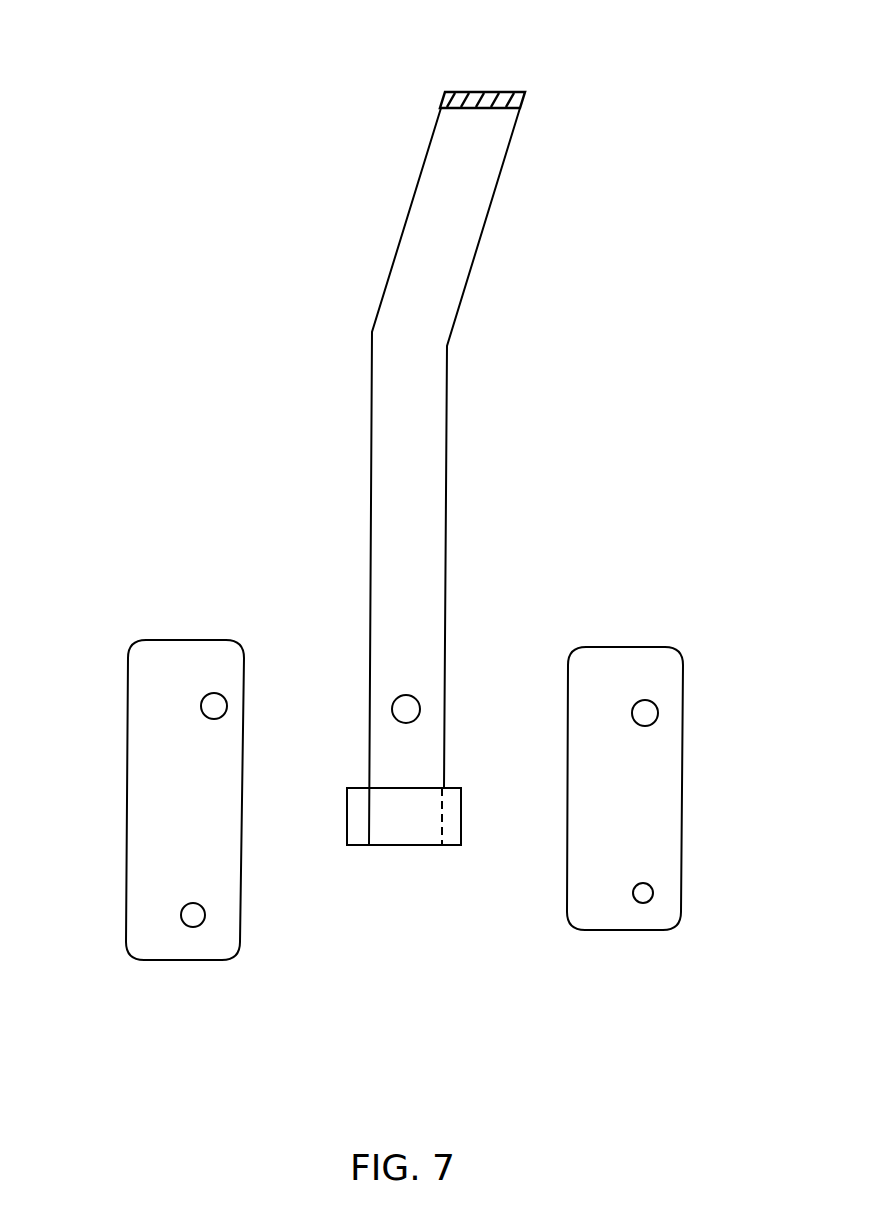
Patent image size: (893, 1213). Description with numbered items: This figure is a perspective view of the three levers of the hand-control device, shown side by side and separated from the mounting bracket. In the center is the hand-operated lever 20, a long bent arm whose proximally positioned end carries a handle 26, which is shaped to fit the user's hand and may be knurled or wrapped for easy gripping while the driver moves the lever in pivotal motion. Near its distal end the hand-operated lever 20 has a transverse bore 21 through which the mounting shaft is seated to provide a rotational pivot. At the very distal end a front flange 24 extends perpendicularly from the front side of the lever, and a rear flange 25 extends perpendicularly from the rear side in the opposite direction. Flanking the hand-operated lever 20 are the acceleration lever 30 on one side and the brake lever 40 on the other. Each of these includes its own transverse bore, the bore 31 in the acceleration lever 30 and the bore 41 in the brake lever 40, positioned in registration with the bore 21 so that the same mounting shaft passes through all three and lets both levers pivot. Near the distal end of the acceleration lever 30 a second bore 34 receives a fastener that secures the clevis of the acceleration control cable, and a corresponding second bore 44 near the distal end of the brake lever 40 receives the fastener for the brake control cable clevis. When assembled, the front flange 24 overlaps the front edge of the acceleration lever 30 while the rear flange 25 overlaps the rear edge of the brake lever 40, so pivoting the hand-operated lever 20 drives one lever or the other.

The hand-operated lever 20 is at (730, 355).
The transverse bore 21 is at (418, 708).
The front flange 24 is at (362, 817).
The rear flange 25 is at (453, 833).
The handle 26 is at (477, 93).
The acceleration lever 30 is at (795, 626).
The transverse bore 31 is at (655, 715).
The second bore 34 is at (650, 895).
The brake lever 40 is at (85, 652).
The transverse bore 41 is at (205, 712).
The second bore 44 is at (187, 918).